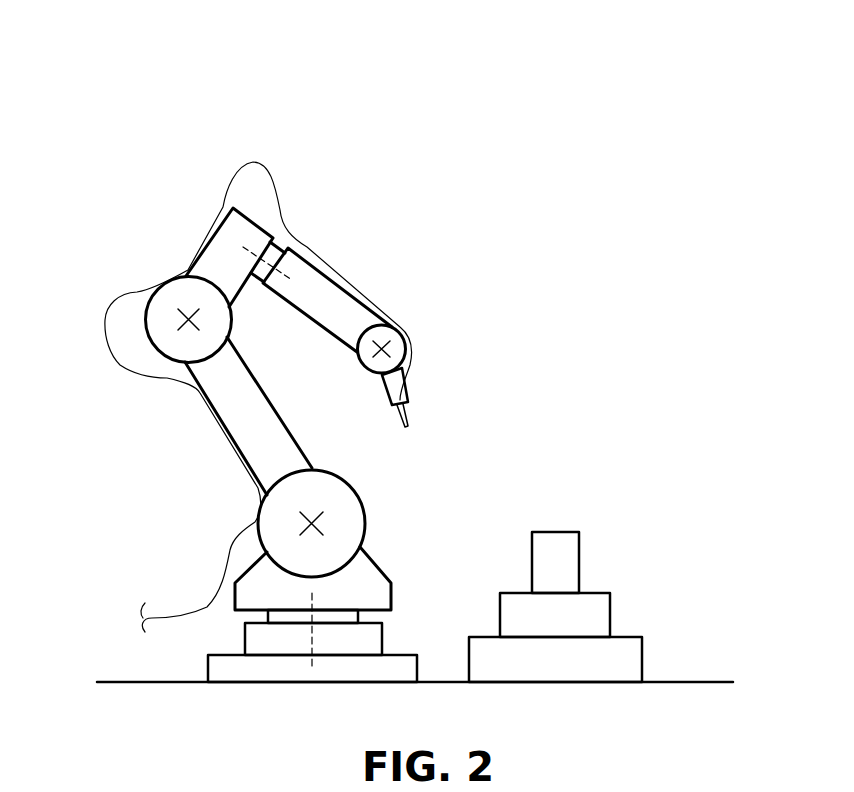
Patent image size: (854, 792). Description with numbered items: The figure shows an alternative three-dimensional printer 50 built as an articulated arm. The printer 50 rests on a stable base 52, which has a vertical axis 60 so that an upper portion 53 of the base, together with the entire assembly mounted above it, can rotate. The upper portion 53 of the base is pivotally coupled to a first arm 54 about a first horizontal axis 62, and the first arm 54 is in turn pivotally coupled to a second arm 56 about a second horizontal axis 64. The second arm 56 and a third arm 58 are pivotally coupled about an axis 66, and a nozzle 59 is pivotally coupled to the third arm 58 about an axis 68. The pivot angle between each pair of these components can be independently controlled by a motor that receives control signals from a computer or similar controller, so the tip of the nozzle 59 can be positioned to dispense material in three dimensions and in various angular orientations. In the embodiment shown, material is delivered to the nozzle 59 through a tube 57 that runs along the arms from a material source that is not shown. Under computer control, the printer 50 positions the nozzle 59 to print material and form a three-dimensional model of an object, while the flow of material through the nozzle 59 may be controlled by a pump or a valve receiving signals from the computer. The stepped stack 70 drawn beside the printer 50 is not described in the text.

The robotic system 50 is at (703, 268).
The base plate 52 is at (243, 637).
The base mount 53 is at (363, 582).
The lower arm 54 is at (252, 403).
The upper arm 56 is at (218, 245).
The protective cover 57 is at (247, 160).
The forearm 58 is at (330, 297).
The tool 59 is at (407, 390).
The rotary base 60 is at (313, 640).
The shoulder joint 62 is at (313, 518).
The elbow joint 64 is at (190, 313).
The wrist coupling 66 is at (255, 253).
The wrist joint 68 is at (382, 344).
The workpiece 70 is at (703, 512).